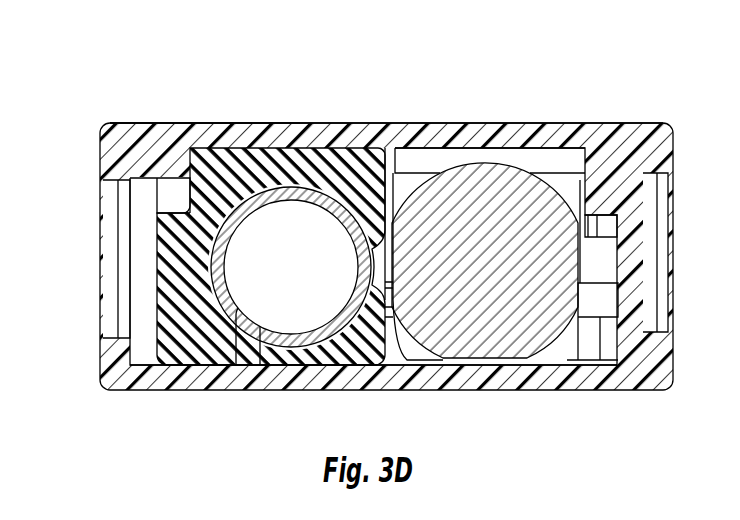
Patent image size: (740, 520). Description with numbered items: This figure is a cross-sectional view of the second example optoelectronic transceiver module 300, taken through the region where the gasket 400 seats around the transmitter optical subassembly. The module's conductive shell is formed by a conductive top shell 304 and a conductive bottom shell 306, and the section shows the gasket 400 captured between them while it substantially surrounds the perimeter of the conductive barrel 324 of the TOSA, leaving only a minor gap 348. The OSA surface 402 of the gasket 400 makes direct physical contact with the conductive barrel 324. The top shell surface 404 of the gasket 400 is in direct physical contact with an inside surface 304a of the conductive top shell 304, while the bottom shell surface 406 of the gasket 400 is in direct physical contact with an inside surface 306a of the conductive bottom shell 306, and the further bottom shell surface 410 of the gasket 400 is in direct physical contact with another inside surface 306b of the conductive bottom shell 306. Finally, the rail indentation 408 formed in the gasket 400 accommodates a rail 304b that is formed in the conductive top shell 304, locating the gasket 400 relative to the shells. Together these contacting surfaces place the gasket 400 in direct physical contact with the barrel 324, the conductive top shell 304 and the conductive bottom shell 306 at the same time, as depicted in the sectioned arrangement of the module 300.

The optoelectronic transceiver module 300 is at (212, 60).
The conductive top shell 304 is at (327, 132).
The inside surface of the conductive top shell 304a is at (444, 138).
The rail 304b is at (165, 127).
The conductive bottom shell 306 is at (515, 380).
The inside surface of the conductive bottom shell 306a is at (403, 362).
The inside surface of the conductive bottom shell 306b is at (150, 212).
The barrel 324 is at (316, 337).
The minor gap 348 is at (394, 260).
The gasket 400 is at (180, 268).
The OSA surface 402 is at (270, 312).
The top shell surface 404 is at (357, 140).
The bottom shell surface 406 is at (207, 366).
The rail indentation 408 is at (184, 203).
The bottom shell surface 410 is at (140, 296).